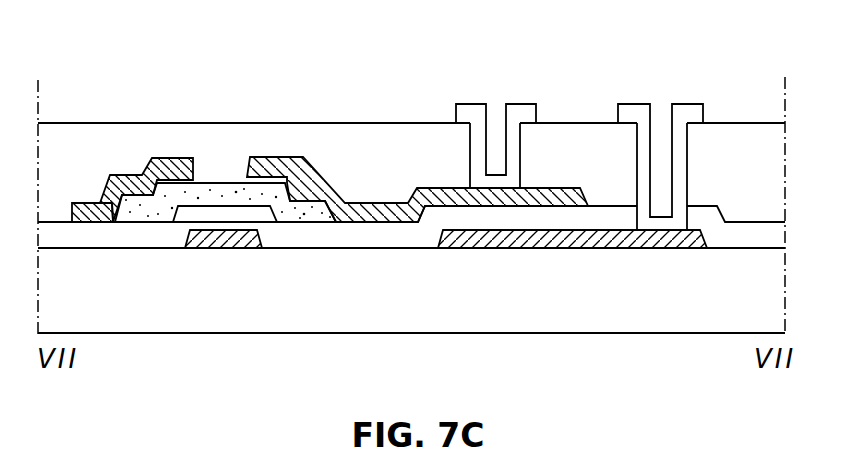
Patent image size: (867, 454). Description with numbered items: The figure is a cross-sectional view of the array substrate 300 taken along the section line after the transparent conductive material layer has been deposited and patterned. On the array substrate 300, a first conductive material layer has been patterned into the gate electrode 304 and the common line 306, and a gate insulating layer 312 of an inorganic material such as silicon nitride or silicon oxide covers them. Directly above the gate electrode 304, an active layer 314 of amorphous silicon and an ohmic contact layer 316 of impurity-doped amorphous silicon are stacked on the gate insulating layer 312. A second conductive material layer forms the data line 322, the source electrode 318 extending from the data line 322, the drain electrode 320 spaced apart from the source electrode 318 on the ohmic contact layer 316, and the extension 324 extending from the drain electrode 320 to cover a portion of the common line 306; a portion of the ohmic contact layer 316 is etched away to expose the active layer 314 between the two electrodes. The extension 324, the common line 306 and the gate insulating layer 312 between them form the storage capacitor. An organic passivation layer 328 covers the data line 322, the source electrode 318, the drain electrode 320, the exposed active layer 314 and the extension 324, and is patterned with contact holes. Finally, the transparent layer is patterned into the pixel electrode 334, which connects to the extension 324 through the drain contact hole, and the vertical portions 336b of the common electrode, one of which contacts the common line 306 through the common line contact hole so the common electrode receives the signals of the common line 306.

The array substrate 300 is at (431, 317).
The gate electrode 304 is at (216, 249).
The common line 306 is at (517, 249).
The gate insulating layer 312 is at (612, 193).
The active layer 314 is at (223, 182).
The ohmic contact layer 316 is at (268, 168).
The source electrode 318 is at (160, 156).
The drain electrode 320 is at (328, 179).
The data line 322 is at (82, 198).
The extension 324 is at (452, 187).
The passivation layer 328 is at (392, 122).
The pixel electrode 334 is at (522, 103).
The vertical portions of the common electrode 336b is at (690, 103).